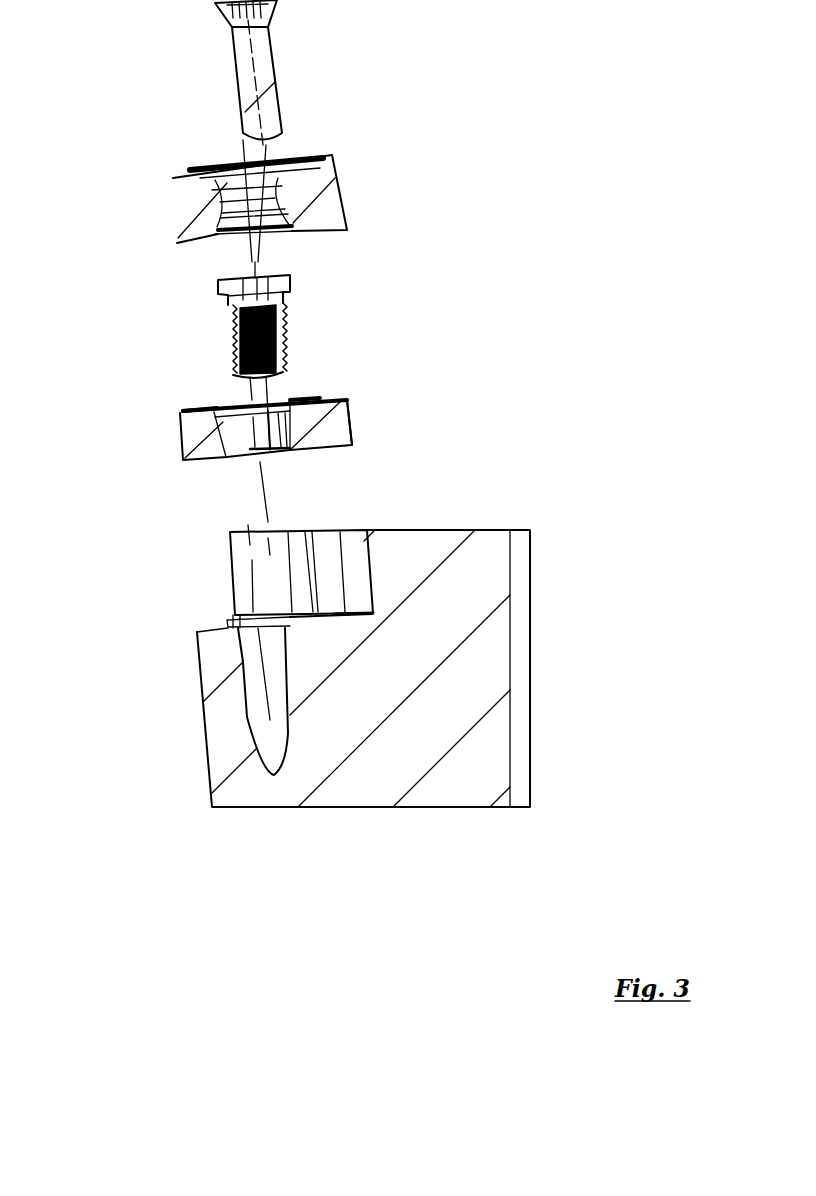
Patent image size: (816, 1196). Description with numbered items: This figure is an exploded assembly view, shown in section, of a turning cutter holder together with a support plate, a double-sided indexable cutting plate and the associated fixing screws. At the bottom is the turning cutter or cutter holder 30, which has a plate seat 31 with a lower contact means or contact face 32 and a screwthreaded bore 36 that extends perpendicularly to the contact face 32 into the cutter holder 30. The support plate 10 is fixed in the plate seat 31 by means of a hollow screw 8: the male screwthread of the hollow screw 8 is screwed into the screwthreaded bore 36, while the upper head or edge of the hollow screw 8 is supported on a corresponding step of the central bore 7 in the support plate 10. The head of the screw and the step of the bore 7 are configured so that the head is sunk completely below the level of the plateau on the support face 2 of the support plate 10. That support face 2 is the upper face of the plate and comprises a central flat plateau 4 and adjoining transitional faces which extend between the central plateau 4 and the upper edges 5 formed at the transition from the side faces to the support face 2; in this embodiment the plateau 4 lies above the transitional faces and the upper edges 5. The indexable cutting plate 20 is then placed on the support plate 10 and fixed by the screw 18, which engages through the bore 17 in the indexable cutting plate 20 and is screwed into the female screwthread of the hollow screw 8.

The screw 18 is at (267, 58).
The clamping block 20 is at (345, 190).
The bore 17 is at (268, 217).
The hollow screw 8 is at (287, 293).
The support plate 10 is at (168, 452).
The support face 2 is at (210, 405).
The central flat plateau 4 is at (306, 394).
The upper edges 5 is at (348, 401).
The central bore 7 is at (270, 460).
The cutter holder 30 is at (468, 526).
The plate seat 31 is at (247, 583).
The contact face 32 is at (222, 628).
The screwthreaded bore 36 is at (243, 663).